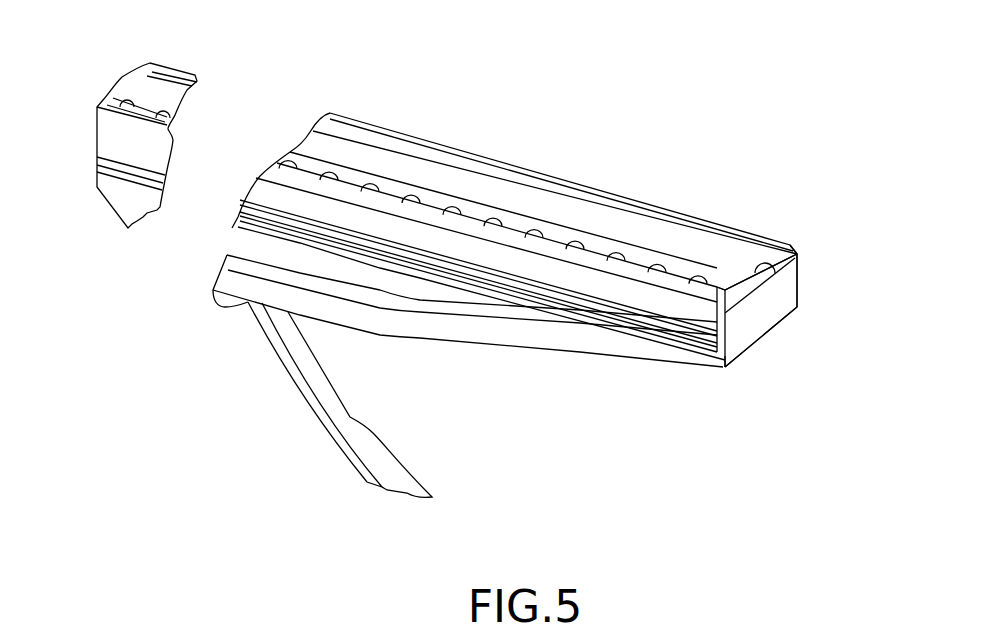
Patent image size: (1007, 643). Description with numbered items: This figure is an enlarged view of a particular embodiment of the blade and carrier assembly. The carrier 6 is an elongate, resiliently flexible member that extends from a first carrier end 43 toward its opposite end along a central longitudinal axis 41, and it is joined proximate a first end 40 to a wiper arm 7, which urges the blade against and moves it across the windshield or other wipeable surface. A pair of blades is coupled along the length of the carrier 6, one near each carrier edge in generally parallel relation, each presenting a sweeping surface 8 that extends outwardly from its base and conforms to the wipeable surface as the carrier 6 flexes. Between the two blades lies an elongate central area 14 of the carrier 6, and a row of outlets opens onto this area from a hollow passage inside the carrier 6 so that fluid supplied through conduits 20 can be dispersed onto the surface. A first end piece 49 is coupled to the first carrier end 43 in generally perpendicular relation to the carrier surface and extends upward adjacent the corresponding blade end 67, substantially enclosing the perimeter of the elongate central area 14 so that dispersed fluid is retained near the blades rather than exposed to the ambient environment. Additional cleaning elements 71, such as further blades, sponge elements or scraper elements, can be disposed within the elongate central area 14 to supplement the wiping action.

The longitudinal axis 41 is at (97, 107).
The sweeping surface 8 is at (603, 250).
The elongate central area 14 is at (747, 260).
The additional cleaning elements 71 is at (752, 258).
The blade end 67 is at (806, 256).
The first end piece 49 is at (798, 267).
The carrier 6 is at (763, 325).
The first carrier end 43 is at (733, 353).
The first end 40 is at (290, 325).
The conduits 20 is at (318, 413).
The wiper arm 7 is at (397, 478).